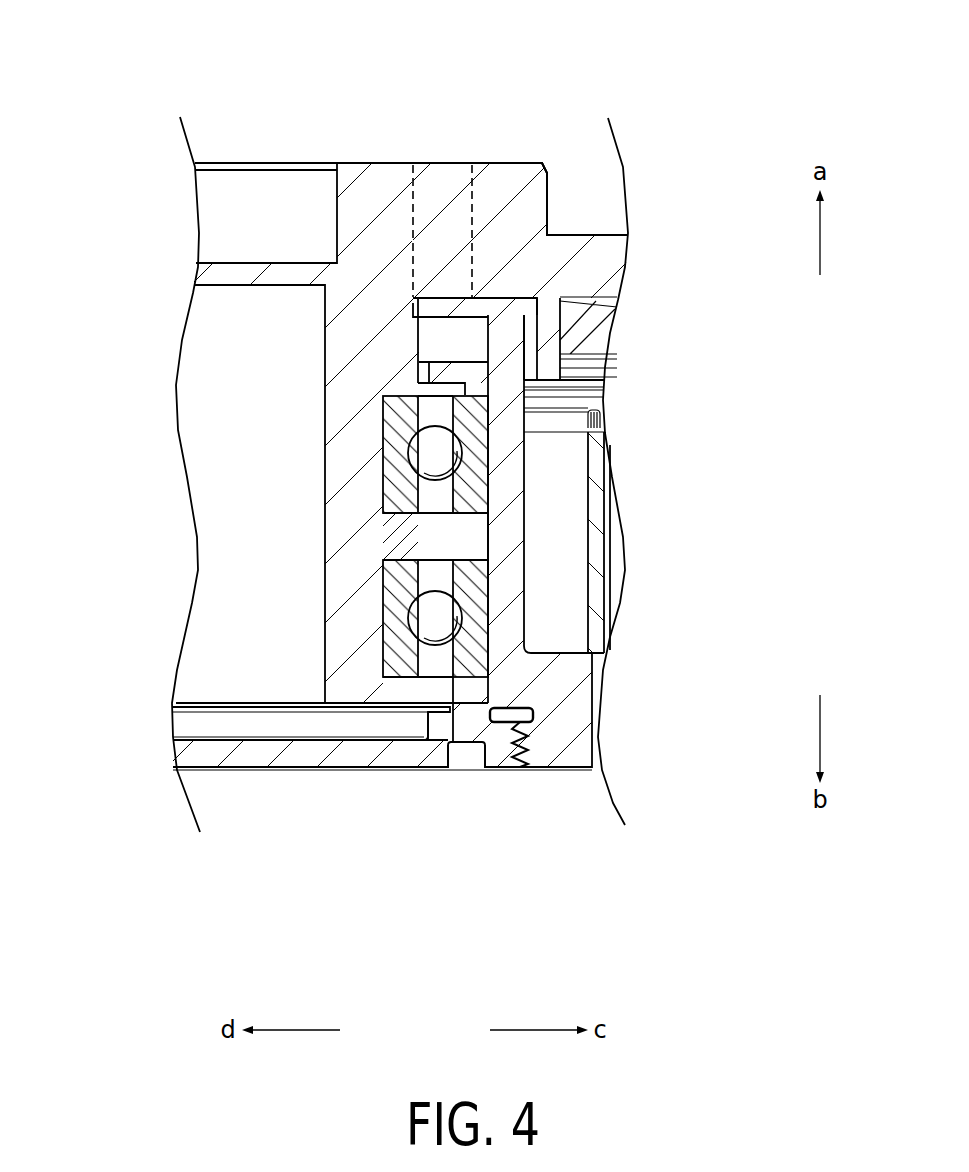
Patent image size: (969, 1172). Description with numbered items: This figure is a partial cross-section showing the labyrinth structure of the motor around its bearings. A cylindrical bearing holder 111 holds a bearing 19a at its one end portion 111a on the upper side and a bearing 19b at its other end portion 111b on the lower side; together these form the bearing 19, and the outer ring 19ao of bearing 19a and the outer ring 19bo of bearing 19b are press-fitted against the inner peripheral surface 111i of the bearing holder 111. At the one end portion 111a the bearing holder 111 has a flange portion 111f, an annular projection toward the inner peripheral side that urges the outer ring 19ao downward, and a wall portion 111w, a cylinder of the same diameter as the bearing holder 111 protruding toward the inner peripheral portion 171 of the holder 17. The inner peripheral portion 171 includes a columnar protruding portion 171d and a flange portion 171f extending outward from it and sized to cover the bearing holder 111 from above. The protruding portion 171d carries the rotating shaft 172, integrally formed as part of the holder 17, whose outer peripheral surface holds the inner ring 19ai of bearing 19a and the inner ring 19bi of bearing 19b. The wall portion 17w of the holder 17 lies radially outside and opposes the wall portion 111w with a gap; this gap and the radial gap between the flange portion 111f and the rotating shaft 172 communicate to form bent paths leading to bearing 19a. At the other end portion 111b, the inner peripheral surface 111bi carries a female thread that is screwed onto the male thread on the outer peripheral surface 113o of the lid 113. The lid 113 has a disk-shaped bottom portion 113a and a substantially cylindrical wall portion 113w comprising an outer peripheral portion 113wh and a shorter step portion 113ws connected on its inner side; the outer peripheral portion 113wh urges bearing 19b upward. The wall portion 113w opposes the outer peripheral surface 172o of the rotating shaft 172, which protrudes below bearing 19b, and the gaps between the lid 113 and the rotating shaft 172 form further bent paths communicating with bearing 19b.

The holder 17 is at (468, 192).
The inner peripheral portion 171 is at (553, 125).
The protruding portion 171d is at (508, 178).
The flange portion 171f is at (592, 245).
The wall portion 17w is at (548, 333).
The rotating shaft 172 is at (408, 433).
The outer peripheral surface 172o is at (400, 697).
The bearing holder 111 is at (423, 485).
The wall portion 111w is at (505, 343).
The flange portion 111f is at (458, 368).
The one end portion 111a is at (548, 398).
The inner peripheral surface 111i is at (488, 538).
The other end portion 111b is at (592, 776).
The inner peripheral surface 111bi is at (534, 755).
The bearing 19 is at (617, 536).
The bearing 19a is at (593, 466).
The outer ring 19ao is at (475, 475).
The inner ring 19ai is at (410, 498).
The bearing 19b is at (593, 618).
The outer ring 19bo is at (472, 573).
The inner ring 19bi is at (403, 583).
The lid 113 is at (382, 842).
The bottom portion 113a is at (323, 755).
The outer peripheral surface 113o is at (497, 753).
The wall portion 113w is at (407, 843).
The step portion 113ws is at (440, 733).
The outer peripheral portion 113wh is at (470, 708).